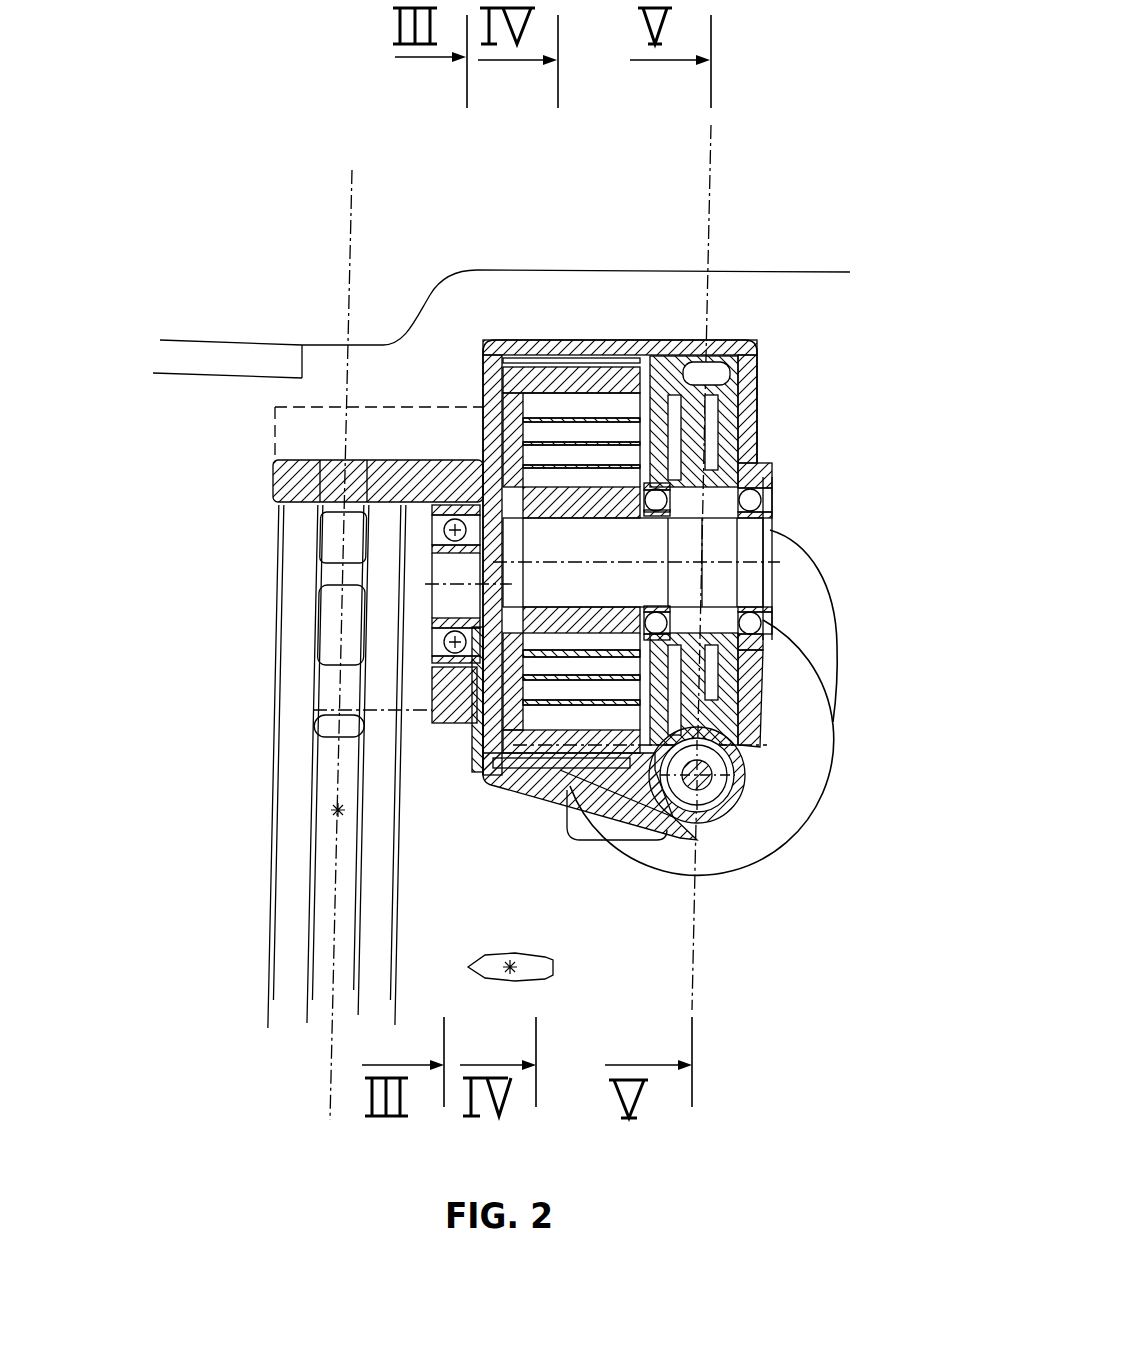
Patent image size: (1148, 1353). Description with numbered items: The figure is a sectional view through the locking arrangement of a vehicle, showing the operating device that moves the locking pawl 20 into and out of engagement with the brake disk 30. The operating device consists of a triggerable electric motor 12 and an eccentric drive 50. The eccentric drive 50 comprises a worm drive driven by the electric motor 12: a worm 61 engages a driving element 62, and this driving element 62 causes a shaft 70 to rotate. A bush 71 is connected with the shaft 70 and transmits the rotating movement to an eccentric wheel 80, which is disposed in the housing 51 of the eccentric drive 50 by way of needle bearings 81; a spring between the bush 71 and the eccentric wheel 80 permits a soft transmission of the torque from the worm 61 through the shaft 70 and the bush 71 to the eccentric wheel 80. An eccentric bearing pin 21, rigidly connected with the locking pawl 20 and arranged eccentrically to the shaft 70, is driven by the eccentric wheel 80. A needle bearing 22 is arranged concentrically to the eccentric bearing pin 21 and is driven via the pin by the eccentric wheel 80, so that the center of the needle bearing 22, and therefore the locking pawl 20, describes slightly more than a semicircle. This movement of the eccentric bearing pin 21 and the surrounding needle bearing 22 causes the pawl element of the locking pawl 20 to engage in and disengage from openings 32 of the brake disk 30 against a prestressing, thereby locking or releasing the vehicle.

The electric motor 12 is at (823, 754).
The locking pawl 20 is at (292, 481).
The eccentric bearing pin 21 is at (447, 577).
The needle bearing 22 is at (443, 527).
The brake disk 30 is at (293, 592).
The openings 32 is at (332, 637).
The eccentric drive 50 is at (793, 338).
The housing 51 is at (485, 780).
The worm 61 is at (742, 818).
The driving element 62 is at (713, 459).
The shaft 70 is at (758, 534).
The bush 71 is at (605, 495).
The eccentric wheel 80 is at (577, 373).
The needle bearings 81 is at (526, 790).